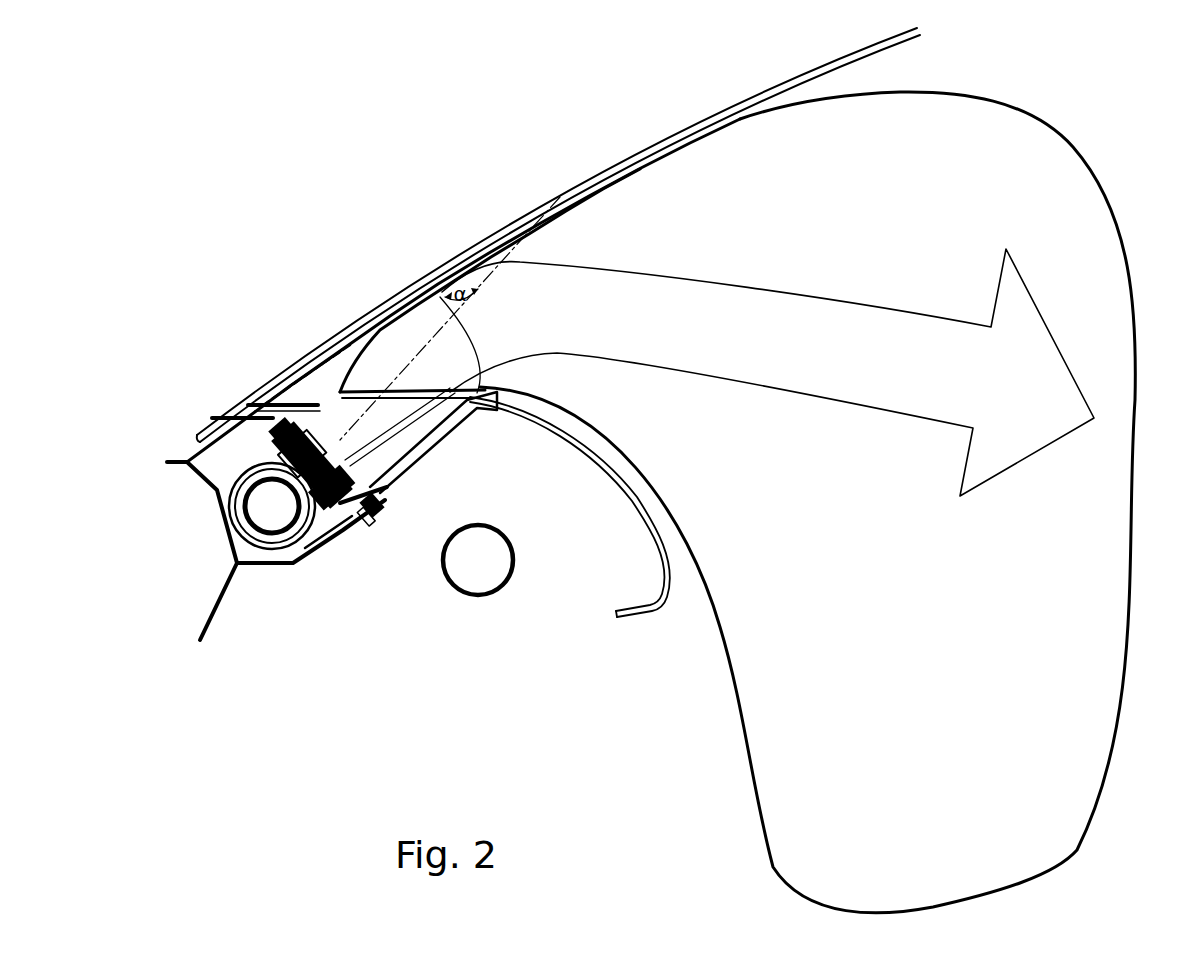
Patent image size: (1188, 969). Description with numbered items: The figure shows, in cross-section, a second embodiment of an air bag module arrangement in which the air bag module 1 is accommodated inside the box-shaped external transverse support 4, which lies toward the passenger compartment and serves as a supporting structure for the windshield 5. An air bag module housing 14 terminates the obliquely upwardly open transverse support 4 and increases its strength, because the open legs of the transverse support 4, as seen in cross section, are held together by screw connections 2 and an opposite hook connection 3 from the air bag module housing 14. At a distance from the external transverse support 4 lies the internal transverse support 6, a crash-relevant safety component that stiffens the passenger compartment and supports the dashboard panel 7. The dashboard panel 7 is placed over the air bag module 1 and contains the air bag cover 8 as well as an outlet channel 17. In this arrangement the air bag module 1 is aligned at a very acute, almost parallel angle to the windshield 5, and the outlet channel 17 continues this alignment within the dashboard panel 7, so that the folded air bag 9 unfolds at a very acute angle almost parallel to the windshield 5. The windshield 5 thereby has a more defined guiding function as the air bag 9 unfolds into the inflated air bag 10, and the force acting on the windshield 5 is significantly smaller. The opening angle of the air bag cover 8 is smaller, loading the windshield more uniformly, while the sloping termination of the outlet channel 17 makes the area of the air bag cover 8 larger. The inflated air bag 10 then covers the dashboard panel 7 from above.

The air bag module 1 is at (306, 481).
The screw connection 2 is at (384, 502).
The hook connection 3 is at (283, 418).
The external transverse support 4 is at (300, 563).
The windshield 5 is at (437, 272).
The internal transverse support 6 is at (490, 596).
The dashboard panel 7 is at (640, 507).
The air bag cover 8 is at (343, 338).
The folded air bag 9 is at (337, 523).
The inflated air bag 10 is at (1077, 727).
The air bag module housing 14 is at (273, 553).
The outlet channel 17 is at (445, 435).